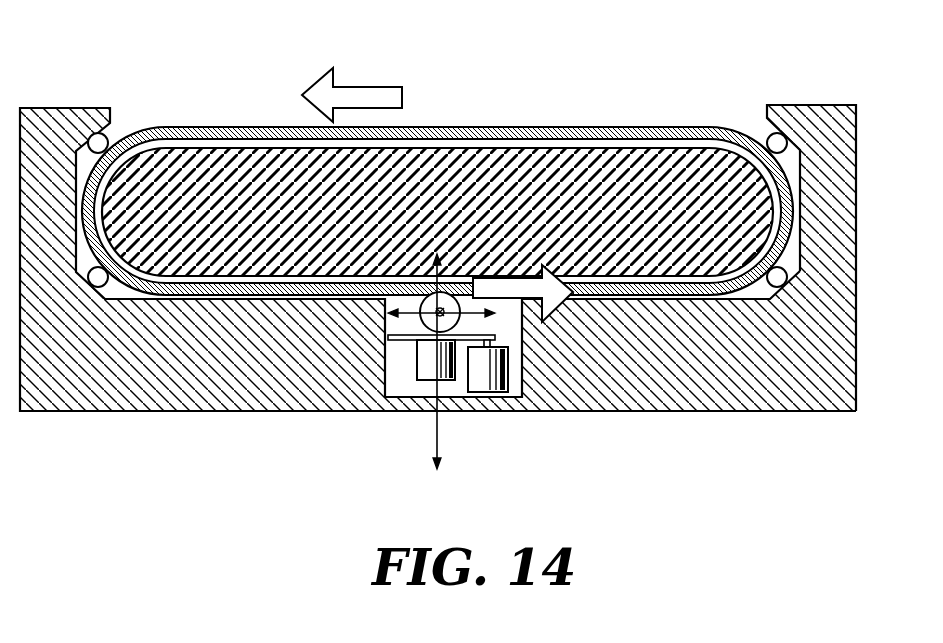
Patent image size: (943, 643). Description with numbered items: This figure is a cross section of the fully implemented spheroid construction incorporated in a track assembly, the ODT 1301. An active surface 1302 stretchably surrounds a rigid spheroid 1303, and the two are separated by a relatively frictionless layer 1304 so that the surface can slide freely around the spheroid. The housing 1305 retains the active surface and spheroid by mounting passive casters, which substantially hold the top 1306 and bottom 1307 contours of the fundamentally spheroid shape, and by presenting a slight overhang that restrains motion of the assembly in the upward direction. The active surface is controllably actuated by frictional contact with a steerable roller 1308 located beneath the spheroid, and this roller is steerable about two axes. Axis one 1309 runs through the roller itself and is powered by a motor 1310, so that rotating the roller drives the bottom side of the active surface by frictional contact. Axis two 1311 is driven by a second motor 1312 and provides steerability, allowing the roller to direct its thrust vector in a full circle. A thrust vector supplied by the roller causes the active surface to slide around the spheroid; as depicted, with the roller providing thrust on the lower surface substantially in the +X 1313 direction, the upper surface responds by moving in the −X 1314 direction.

The ODT 1301 is at (808, 105).
The active surface 1302 is at (620, 133).
The rigid spheroid 1303 is at (233, 165).
The relatively frictionless layer 1304 is at (490, 143).
The housing 1305 is at (181, 385).
The top contour 1306 is at (98, 143).
The bottom contour 1307 is at (97, 280).
The steerable roller 1308 is at (427, 330).
The axis one 1309 is at (437, 440).
The motor 1310 is at (426, 368).
The axis two 1311 is at (470, 318).
The motor 1312 is at (488, 352).
The +X direction 1313 is at (552, 290).
The −X direction 1314 is at (360, 97).